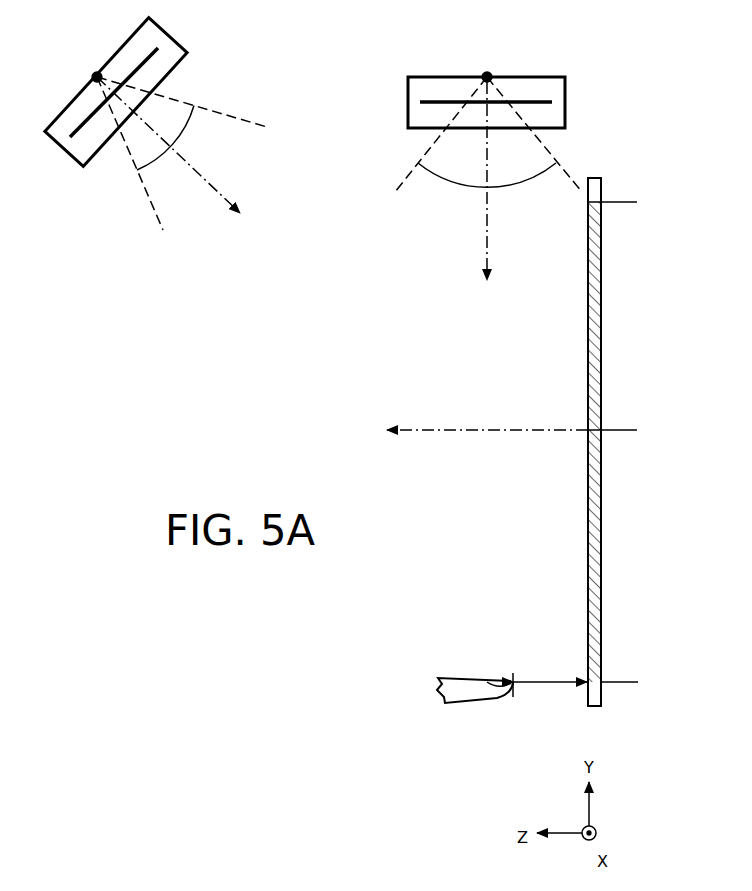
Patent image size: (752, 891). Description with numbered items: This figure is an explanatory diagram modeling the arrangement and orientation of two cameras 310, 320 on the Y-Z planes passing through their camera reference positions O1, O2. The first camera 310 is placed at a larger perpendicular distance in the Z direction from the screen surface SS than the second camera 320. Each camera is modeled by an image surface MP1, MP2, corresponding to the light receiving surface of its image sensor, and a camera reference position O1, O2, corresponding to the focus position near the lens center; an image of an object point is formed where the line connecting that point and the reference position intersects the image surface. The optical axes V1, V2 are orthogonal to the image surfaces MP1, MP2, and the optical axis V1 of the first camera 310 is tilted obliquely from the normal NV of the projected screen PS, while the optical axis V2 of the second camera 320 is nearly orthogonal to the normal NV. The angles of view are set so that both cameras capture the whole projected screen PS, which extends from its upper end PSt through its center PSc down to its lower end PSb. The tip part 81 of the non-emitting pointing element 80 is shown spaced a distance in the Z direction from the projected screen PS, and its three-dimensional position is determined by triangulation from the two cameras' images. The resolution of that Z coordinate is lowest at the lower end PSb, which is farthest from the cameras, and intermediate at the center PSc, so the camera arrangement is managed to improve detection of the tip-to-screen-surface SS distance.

The first camera 310 is at (163, 32).
The second camera 320 is at (537, 77).
The non-emitting pointing element 80 is at (467, 683).
The tip part 81 is at (514, 678).
The image surface MP1 is at (82, 135).
The image surface MP2 is at (442, 100).
The camera reference position O1 is at (97, 74).
The camera reference position O2 is at (486, 72).
The optical axis V1 is at (174, 164).
The optical axis V2 is at (485, 199).
The projected screen PS is at (587, 297).
The screen surface SS is at (581, 186).
The screen top PSt is at (628, 208).
The center of projected screen PSc is at (631, 433).
The lower end of projected screen PSb is at (638, 685).
The normal of projected screen NV is at (470, 433).